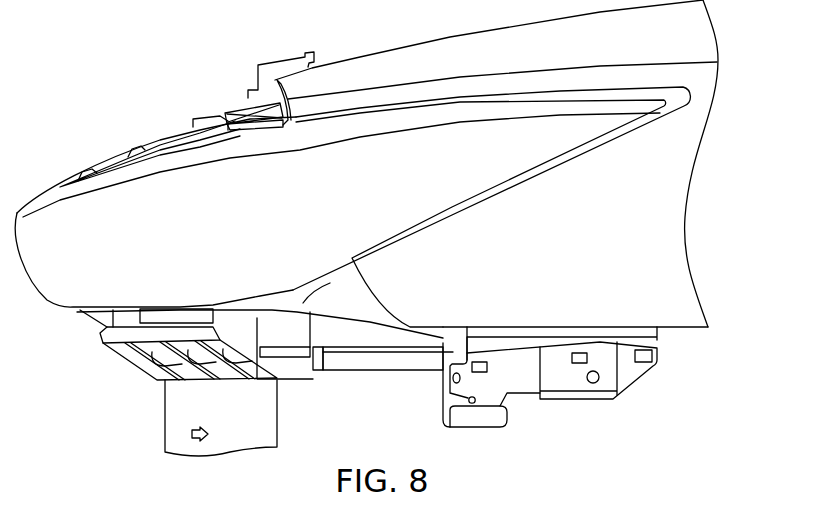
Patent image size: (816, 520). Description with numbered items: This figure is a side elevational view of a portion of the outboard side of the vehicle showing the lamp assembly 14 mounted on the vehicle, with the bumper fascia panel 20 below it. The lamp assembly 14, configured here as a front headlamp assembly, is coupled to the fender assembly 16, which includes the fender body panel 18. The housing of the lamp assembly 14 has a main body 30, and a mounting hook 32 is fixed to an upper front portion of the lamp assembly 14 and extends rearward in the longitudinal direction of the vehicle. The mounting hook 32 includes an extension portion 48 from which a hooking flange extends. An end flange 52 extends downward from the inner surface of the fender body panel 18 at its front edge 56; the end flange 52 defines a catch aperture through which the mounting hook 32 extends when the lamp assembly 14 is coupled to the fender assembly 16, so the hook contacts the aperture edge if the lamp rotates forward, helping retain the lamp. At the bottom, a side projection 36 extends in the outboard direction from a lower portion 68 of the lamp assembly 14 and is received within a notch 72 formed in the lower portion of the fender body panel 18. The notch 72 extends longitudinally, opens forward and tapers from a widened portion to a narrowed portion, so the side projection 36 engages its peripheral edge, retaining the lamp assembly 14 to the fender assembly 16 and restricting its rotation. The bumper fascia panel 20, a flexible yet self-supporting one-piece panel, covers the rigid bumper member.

The lamp assembly 14 is at (58, 268).
The fender assembly 16 is at (300, 108).
The fender body panel 18 is at (399, 66).
The bumper fascia panel 20 is at (510, 393).
The main body 30 is at (169, 141).
The mounting hook 32 is at (233, 115).
The side projection 36 is at (474, 403).
The extension portion 48 is at (284, 128).
The end flange 52 is at (262, 88).
The front edge 56 is at (283, 88).
The lower portion 68 is at (452, 351).
The notch 72 is at (450, 402).